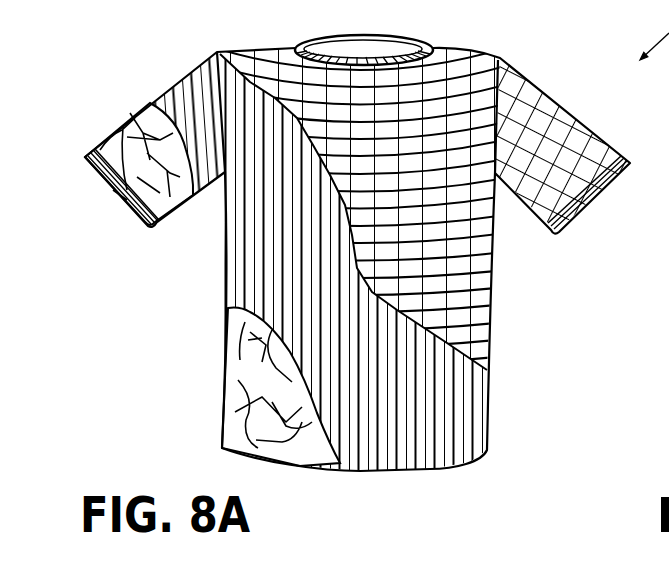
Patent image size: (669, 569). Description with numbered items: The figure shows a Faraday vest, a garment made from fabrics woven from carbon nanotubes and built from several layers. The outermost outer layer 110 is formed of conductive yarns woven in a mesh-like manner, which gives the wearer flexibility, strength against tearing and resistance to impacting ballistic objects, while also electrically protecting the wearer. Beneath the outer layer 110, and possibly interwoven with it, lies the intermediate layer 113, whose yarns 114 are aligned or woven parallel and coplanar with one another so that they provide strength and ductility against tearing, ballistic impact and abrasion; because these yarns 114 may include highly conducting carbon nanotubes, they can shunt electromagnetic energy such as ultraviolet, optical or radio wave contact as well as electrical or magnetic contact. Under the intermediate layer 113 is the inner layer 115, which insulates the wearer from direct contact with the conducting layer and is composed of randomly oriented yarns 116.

The outer layer 110 is at (477, 53).
The intermediate layer 113 is at (505, 392).
The yarns 114 is at (487, 437).
The inner layer 115 is at (227, 350).
The yarns 116 is at (243, 410).